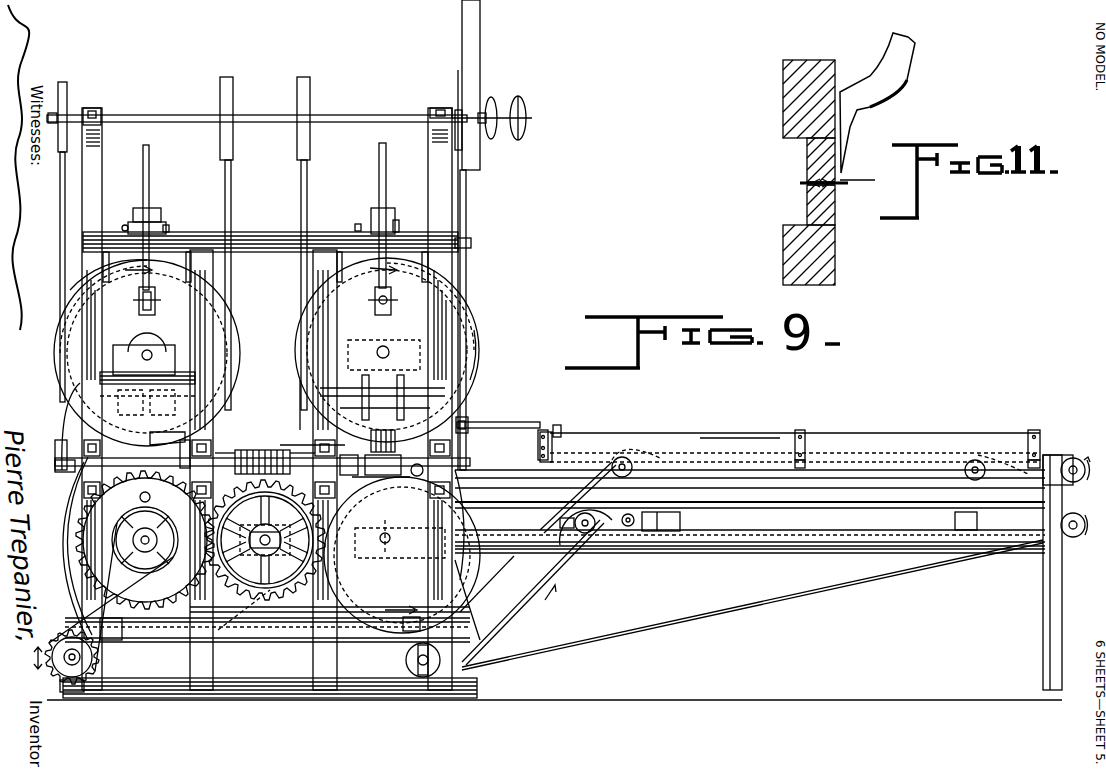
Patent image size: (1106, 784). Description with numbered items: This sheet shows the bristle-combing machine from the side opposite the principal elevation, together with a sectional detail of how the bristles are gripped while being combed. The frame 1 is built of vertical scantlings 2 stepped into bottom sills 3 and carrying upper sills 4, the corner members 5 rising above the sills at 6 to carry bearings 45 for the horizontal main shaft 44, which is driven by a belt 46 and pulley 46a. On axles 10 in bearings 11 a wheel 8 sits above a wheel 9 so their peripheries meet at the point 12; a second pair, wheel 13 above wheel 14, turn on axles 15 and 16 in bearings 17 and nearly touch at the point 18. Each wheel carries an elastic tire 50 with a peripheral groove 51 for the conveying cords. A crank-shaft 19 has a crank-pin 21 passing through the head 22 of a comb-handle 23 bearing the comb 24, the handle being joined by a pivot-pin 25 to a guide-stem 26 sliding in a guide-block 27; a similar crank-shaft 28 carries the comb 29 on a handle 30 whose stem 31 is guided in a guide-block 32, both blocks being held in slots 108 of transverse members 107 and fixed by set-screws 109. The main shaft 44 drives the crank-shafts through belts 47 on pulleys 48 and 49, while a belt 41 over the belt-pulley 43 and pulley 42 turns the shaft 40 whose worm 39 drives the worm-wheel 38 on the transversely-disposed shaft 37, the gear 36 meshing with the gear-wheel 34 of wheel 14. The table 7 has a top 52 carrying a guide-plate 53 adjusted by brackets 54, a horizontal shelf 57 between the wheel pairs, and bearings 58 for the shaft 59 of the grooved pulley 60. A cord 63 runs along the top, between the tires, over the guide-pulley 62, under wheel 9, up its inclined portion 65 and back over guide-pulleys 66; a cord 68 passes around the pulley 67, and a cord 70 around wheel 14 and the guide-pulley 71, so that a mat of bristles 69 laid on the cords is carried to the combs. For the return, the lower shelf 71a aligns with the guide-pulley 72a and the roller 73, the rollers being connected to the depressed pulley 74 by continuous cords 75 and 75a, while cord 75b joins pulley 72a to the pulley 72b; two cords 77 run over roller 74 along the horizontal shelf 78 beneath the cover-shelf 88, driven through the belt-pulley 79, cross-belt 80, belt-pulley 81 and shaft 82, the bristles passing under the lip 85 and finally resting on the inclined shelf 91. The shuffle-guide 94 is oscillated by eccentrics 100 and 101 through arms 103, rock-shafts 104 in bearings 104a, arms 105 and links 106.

In FIG. 9, the frame 1 is at (270, 207).
In FIG. 9, the vertical members or scantlings 2 is at (205, 272).
In FIG. 9, the bottom sills 3 is at (264, 692).
In FIG. 9, the upper sills 4 is at (266, 233).
In FIG. 9, the corner members 5 is at (102, 260).
In FIG. 9, the extensions 6 is at (102, 140).
In FIG. 9, the table 7 is at (840, 432).
In FIG. 9, the wheel 8 is at (479, 345).
In FIG. 9, the wheel 9 is at (462, 583).
In FIG. 9, the axle 10 is at (390, 348).
In FIG. 9, the bearings 11 is at (362, 342).
In FIG. 9, the point 12 is at (330, 446).
In FIG. 9, the wheel 13 is at (112, 298).
In FIG. 11, the wheel 13 is at (815, 60).
In FIG. 9, the wheel 14 is at (58, 468).
In FIG. 11, the wheel 14 is at (822, 268).
In FIG. 9, the axle 15 is at (135, 346).
In FIG. 9, the axle 16 is at (134, 498).
In FIG. 9, the bearings 17 is at (175, 360).
In FIG. 9, the point 18 is at (192, 445).
In FIG. 9, the crank-shaft 19 is at (430, 385).
In FIG. 9, the crank-pin 21 is at (400, 398).
In FIG. 9, the head 22 is at (372, 455).
In FIG. 9, the comb-handle 23 is at (392, 325).
In FIG. 9, the comb 24 is at (380, 455).
In FIG. 9, the pivot-pin 25 is at (370, 301).
In FIG. 9, the guide-stem 26 is at (379, 172).
In FIG. 9, the guide-block 27 is at (372, 212).
In FIG. 9, the crank-shaft 28 is at (147, 402).
In FIG. 9, the comb 29 is at (150, 438).
In FIG. 11, the comb 29 is at (860, 122).
In FIG. 9, the handle 30 is at (157, 302).
In FIG. 9, the stem 31 is at (150, 168).
In FIG. 9, the guide-block 32 is at (152, 210).
In FIG. 9, the gear-wheel 34 is at (150, 642).
In FIG. 9, the gear 36 is at (262, 600).
In FIG. 9, the transversely-disposed shaft 37 is at (238, 616).
In FIG. 9, the worm-wheel 38 is at (282, 600).
In FIG. 9, the worm 39 is at (263, 449).
In FIG. 9, the shaft 40 is at (62, 420).
In FIG. 9, the belt 41 is at (59, 321).
In FIG. 9, the pulley 42 is at (55, 448).
In FIG. 9, the belt-pulley 43 is at (67, 95).
In FIG. 9, the main shaft 44 is at (168, 115).
In FIG. 9, the bearings 45 is at (97, 108).
In FIG. 9, the belt 46 is at (480, 18).
In FIG. 9, the pulley 46a is at (470, 70).
In FIG. 9, the belts 47 is at (225, 170).
In FIG. 9, the pulleys 48 is at (233, 95).
In FIG. 9, the pulleys 49 is at (300, 400).
In FIG. 9, the peripheral rims or tires 50 is at (170, 275).
In FIG. 11, the peripheral rims or tires 50 is at (807, 148).
In FIG. 11, the peripheral grooves 51 is at (807, 175).
In FIG. 9, the top 52 is at (918, 478).
In FIG. 9, the guide-plate 53 is at (742, 432).
In FIG. 9, the brackets 54 is at (548, 436).
In FIG. 9, the horizontal shelf 57 is at (235, 453).
In FIG. 9, the bearings 58 is at (1058, 456).
In FIG. 9, the shaft 59 is at (1088, 458).
In FIG. 9, the grooved pulley 60 is at (1070, 460).
In FIG. 9, the guide-pulley 62 is at (169, 402).
In FIG. 9, the cord 63 is at (272, 450).
In FIG. 9, the upwardly-inclined portion 65 is at (555, 520).
In FIG. 9, the guide-pulleys 66 is at (628, 458).
In FIG. 9, the pulley 67 is at (417, 477).
In FIG. 9, the cord 68 is at (503, 493).
In FIG. 11, the mat of bristles 69 is at (870, 180).
In FIG. 9, the cord 70 is at (348, 478).
In FIG. 11, the cord 70 is at (838, 185).
In FIG. 9, the guide-pulley 71 is at (373, 480).
In FIG. 9, the lower shelf 71a is at (878, 520).
In FIG. 9, the guide-pulley 72a is at (1073, 538).
In FIG. 9, the pulley 72b is at (665, 533).
In FIG. 9, the guide-pulley 73 is at (592, 533).
In FIG. 9, the depressed pulley 74 is at (420, 678).
In FIG. 9, the continuous cord 75 is at (632, 528).
In FIG. 9, the continuous cord 75a is at (562, 585).
In FIG. 9, the continuous cord 75b is at (830, 542).
In FIG. 9, the cords 77 is at (238, 630).
In FIG. 9, the horizontal shelf 78 is at (357, 640).
In FIG. 9, the belt-pulley 79 is at (114, 524).
In FIG. 9, the cross-belt 80 is at (85, 615).
In FIG. 9, the belt-pulley 81 is at (60, 672).
In FIG. 9, the shaft 82 is at (78, 668).
In FIG. 9, the lip 85 is at (58, 548).
In FIG. 9, the cover-shelf 88 is at (265, 640).
In FIG. 9, the inclined shelf 91 is at (478, 610).
In FIG. 9, the shuffle-guide 94 is at (548, 435).
In FIG. 9, the eccentric 100 is at (525, 100).
In FIG. 9, the eccentric 101 is at (493, 98).
In FIG. 9, the arms 103 is at (500, 130).
In FIG. 9, the rock-shafts 104 is at (466, 188).
In FIG. 9, the bearings 104a is at (471, 240).
In FIG. 9, the arms 105 is at (508, 422).
In FIG. 9, the links 106 is at (556, 425).
In FIG. 9, the transverse members 107 is at (122, 228).
In FIG. 9, the longitudinal openings or slots 108 is at (400, 222).
In FIG. 9, the set-screws 109 is at (168, 224).